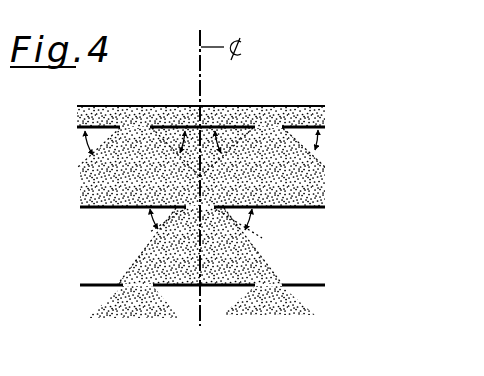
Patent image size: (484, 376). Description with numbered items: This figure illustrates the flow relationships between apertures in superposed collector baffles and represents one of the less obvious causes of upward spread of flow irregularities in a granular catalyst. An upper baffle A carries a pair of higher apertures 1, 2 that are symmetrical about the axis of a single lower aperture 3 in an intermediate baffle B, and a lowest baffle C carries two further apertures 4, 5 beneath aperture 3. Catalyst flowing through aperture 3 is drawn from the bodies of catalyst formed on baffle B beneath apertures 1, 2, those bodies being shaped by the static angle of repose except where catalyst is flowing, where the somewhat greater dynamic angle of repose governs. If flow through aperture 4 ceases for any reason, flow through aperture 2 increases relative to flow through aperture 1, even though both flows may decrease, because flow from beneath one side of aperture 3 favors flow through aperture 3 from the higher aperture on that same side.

The aperture 1 is at (139, 128).
The aperture 2 is at (262, 128).
The aperture 3 is at (200, 246).
The aperture 4 is at (133, 317).
The aperture 5 is at (268, 317).
The baffle A is at (304, 124).
The baffle B is at (314, 190).
The baffle C is at (310, 285).